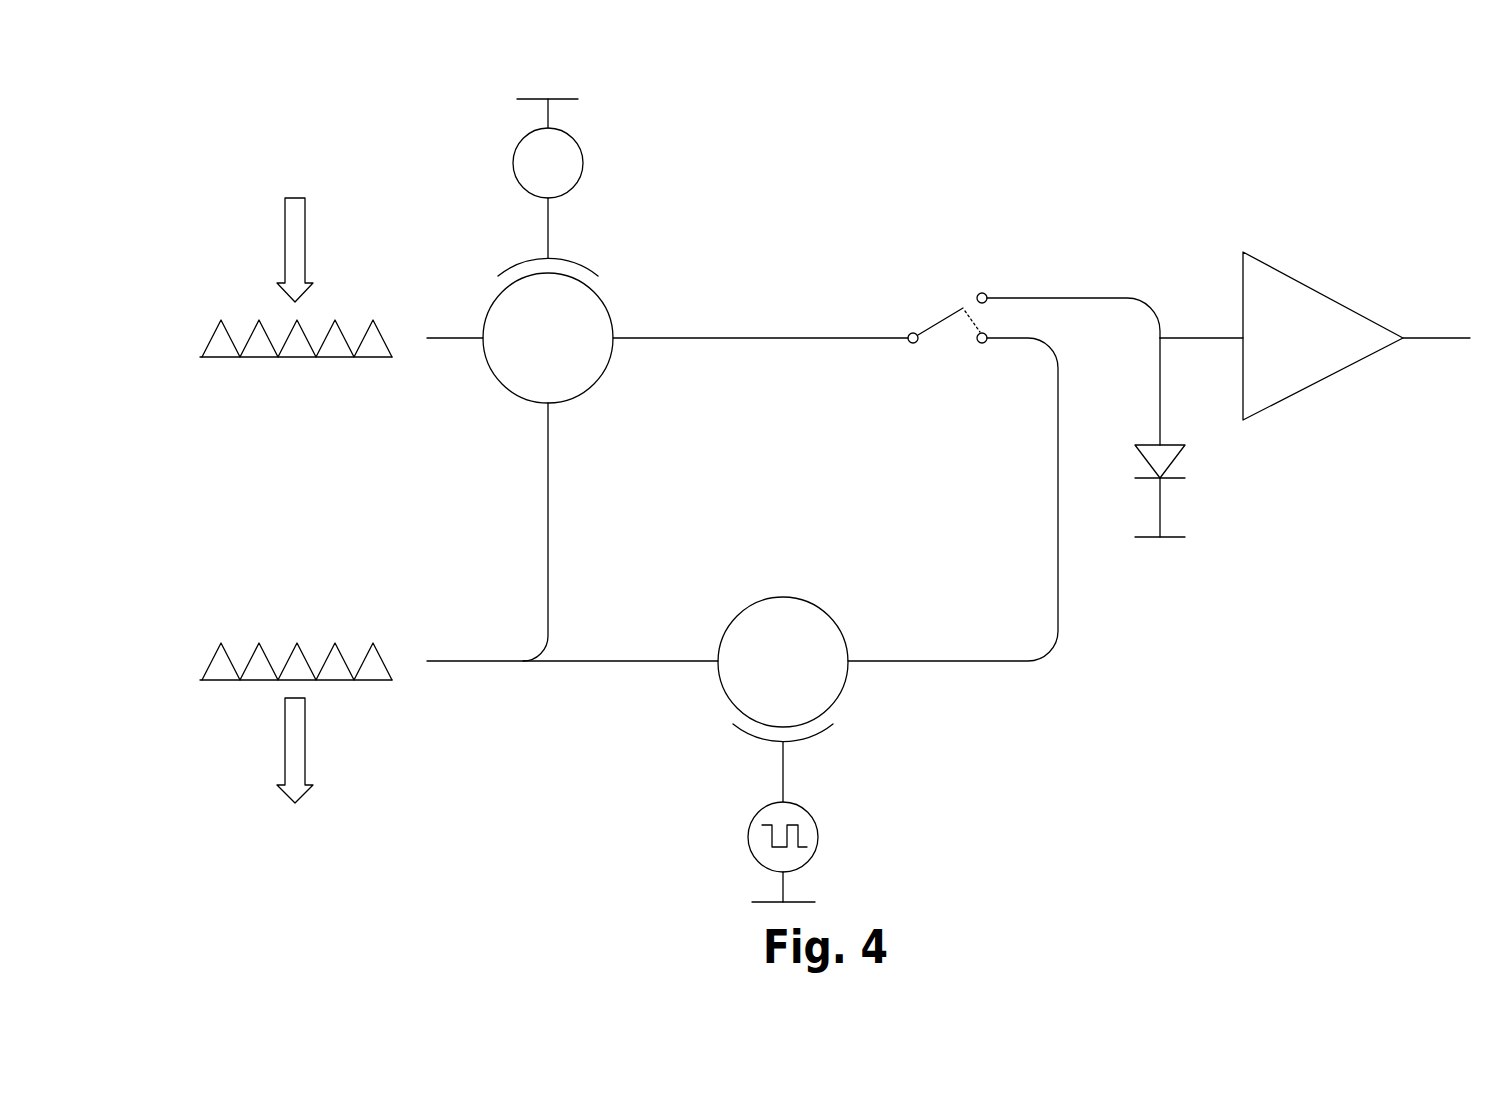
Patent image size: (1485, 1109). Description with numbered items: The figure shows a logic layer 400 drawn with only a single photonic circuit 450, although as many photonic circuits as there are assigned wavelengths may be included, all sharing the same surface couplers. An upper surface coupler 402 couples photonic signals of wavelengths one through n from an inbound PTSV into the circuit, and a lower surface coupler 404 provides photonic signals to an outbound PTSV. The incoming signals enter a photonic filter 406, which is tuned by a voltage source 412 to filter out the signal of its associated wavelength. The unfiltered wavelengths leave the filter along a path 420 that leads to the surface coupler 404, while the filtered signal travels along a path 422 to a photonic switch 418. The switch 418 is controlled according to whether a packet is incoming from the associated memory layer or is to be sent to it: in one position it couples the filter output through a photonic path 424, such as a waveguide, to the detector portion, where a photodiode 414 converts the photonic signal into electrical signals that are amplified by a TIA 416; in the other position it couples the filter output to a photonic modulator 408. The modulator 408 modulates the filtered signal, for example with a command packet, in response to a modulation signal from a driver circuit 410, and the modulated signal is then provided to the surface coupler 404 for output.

The logic layer 400 is at (948, 137).
The surface coupler 402 is at (205, 342).
The surface coupler 404 is at (205, 662).
The photonic filter 406 is at (600, 378).
The photonic modulator 408 is at (843, 693).
The driver circuit 410 is at (818, 837).
The voltage source 412 is at (583, 163).
The photodiode 414 is at (1175, 458).
The TIA 416 is at (1363, 312).
The photonic switch 418 is at (948, 347).
The path 420 is at (546, 531).
The path 422 is at (683, 337).
The photonic path 424 is at (1087, 298).
The photonic circuit 450 is at (1073, 705).